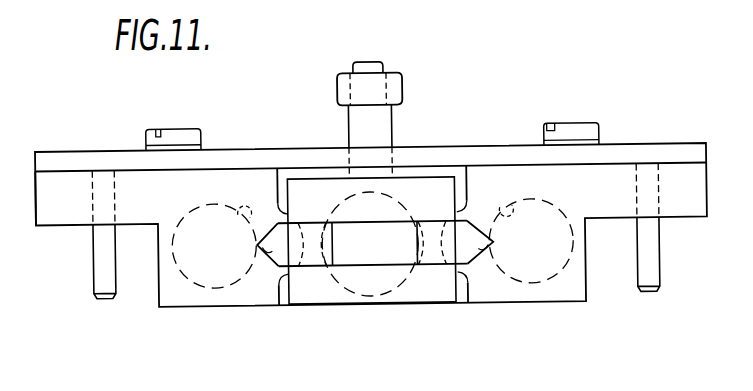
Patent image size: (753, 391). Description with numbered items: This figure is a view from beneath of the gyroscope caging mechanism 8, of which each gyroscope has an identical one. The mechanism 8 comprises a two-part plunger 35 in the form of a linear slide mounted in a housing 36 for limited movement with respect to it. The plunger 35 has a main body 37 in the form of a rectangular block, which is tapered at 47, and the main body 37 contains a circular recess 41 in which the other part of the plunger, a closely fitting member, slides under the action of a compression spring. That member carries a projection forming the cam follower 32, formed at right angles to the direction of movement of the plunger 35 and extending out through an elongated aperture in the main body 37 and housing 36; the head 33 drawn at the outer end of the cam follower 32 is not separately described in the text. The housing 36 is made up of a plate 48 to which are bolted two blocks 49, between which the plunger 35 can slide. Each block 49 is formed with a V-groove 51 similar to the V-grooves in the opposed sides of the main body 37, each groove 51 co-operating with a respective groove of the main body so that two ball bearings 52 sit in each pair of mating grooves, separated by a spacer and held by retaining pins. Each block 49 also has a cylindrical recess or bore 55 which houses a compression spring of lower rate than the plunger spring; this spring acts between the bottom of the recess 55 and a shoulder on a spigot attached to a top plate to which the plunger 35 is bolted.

The caging mechanism 8 is at (481, 140).
The cam follower 32 is at (373, 127).
The knob 33 is at (396, 88).
The plunger 35 is at (320, 310).
The housing 36 is at (243, 145).
The main body 37 is at (400, 298).
The circular recess 41 is at (399, 204).
The taper 47 is at (311, 225).
The plate 48 is at (293, 154).
The blocks 49 is at (376, 231).
The V-groove 51 is at (270, 256).
The ball bearings 52 is at (262, 240).
The cylindrical recess 55 is at (253, 218).